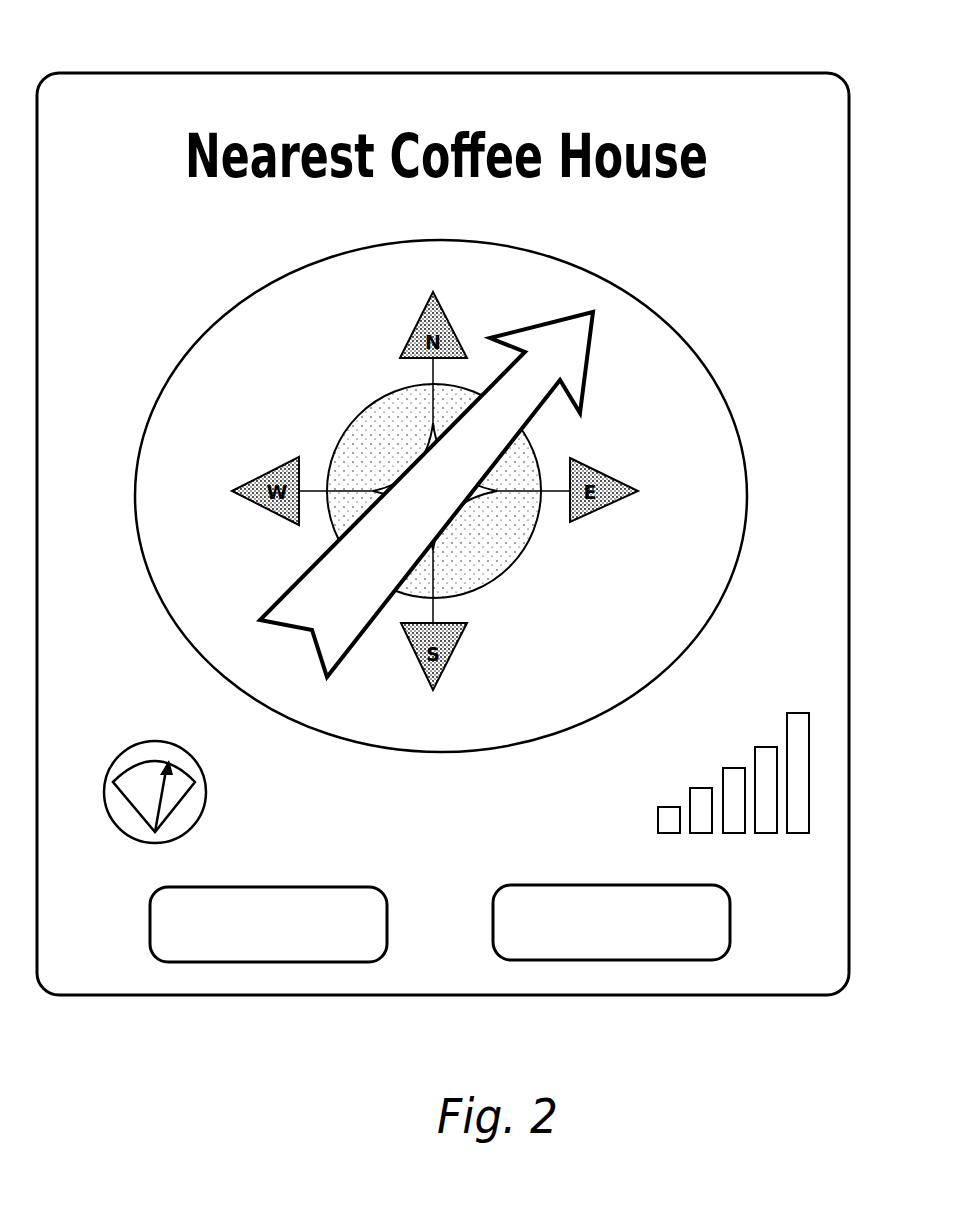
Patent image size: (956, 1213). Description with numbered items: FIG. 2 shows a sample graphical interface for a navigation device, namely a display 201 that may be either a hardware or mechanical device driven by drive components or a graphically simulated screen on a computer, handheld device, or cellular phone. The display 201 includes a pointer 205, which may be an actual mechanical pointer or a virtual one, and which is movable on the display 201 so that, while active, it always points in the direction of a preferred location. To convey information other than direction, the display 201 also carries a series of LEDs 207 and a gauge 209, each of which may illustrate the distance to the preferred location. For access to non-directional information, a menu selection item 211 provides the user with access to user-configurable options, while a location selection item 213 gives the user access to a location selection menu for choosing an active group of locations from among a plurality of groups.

The display 201 is at (107, 73).
The pointer 205 is at (605, 356).
The series of LEDs 207 is at (652, 789).
The gauge 209 is at (222, 783).
The menu selection item 211 is at (348, 886).
The location selection item 213 is at (538, 885).